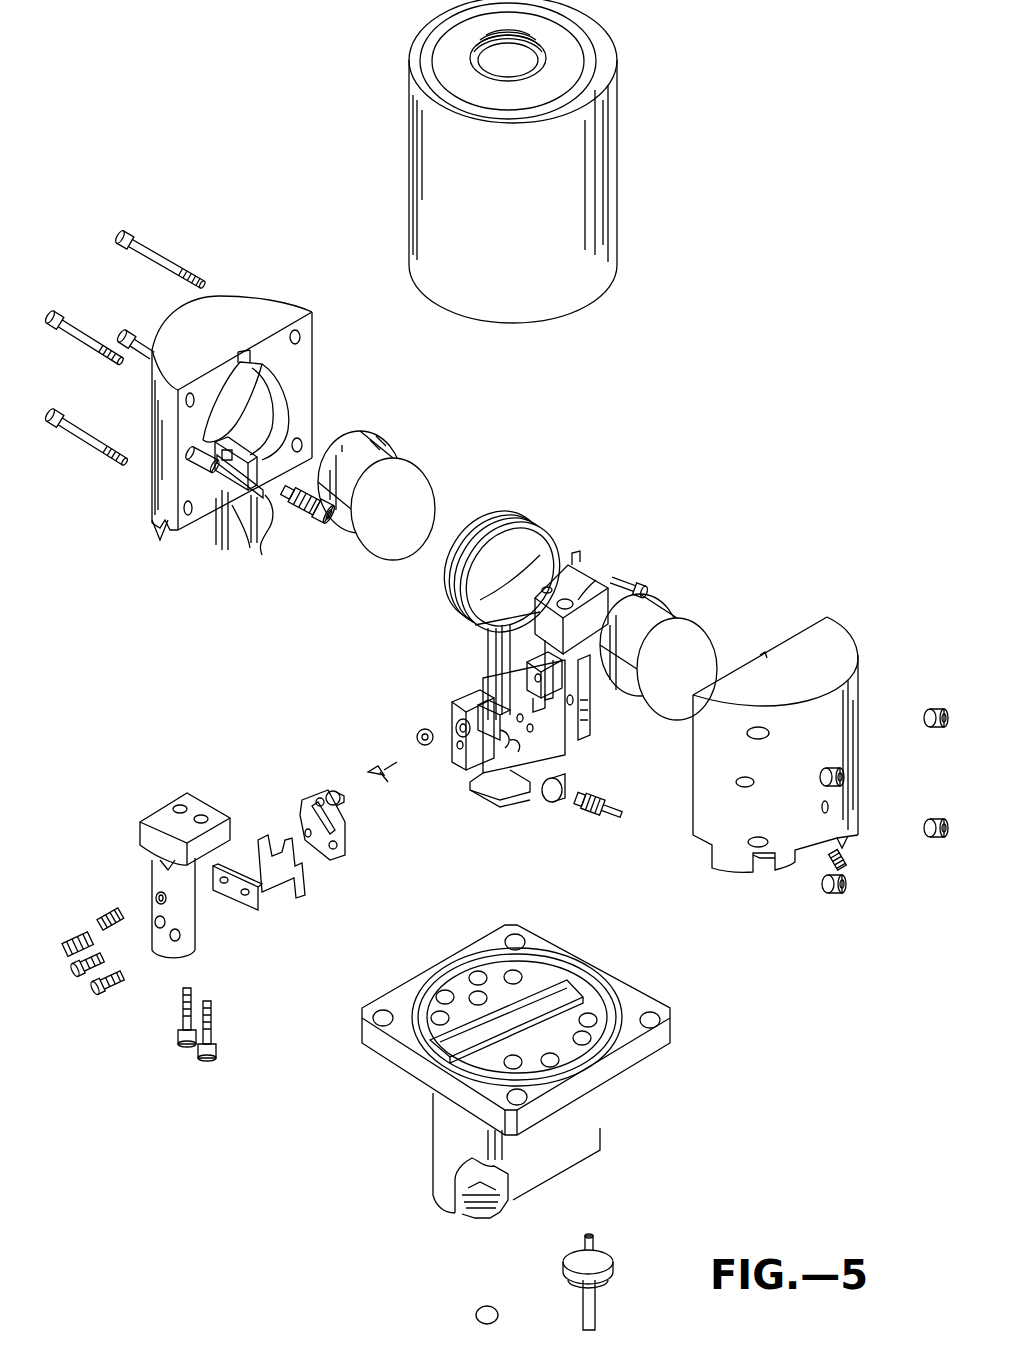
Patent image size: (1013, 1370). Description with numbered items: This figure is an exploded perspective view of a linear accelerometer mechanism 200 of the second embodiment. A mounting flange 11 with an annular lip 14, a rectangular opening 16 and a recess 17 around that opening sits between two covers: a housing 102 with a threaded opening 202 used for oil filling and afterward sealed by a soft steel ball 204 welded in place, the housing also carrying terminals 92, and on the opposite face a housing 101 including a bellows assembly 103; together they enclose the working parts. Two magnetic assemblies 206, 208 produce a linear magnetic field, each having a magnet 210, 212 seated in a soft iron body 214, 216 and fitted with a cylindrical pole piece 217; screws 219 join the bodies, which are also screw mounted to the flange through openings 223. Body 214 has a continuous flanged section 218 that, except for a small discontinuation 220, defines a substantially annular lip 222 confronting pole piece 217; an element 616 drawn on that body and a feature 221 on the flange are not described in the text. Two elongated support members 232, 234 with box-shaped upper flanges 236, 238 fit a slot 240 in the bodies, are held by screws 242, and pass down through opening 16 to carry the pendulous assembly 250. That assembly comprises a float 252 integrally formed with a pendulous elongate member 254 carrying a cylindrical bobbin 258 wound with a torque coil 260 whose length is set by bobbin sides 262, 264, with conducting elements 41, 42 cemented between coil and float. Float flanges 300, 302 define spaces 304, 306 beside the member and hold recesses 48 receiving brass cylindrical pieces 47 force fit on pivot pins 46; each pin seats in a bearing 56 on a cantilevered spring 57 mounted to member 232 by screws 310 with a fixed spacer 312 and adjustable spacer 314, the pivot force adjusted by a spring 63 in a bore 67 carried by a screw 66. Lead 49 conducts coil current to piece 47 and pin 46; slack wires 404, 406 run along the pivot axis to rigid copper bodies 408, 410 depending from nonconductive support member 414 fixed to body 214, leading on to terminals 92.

The housing 101 is at (618, 165).
The bellows assembly 103 is at (540, 50).
The linear accelerometer mechanism 200 is at (762, 366).
The magnetic assembly 208 is at (852, 582).
The screws 219 is at (178, 268).
The soft iron body 214 is at (282, 296).
The annular lip 222 is at (272, 398).
The flanged section 218 is at (288, 418).
The slot 616 is at (232, 396).
The magnet 210 is at (368, 448).
The cylindrical pole piece 217 is at (405, 466).
The discontinuation 220 is at (258, 530).
The support member 414 is at (262, 472).
The rigid body 410 is at (296, 508).
The wire 406 is at (268, 508).
The wire 404 is at (228, 545).
The rigid body 408 is at (214, 535).
The slot 240 is at (148, 542).
The magnetic assembly 206 is at (150, 566).
The pendulous assembly 250 is at (580, 520).
The side of bobbin 262 is at (506, 515).
The side of bobbin 264 is at (510, 577).
The torque coil 260 is at (500, 530).
The cylindrical bobbin 258 is at (480, 626).
The conducting element 41 is at (486, 640).
The conducting element 42 is at (500, 652).
The pendulous elongate member 254 is at (508, 662).
The flange 300 is at (482, 732).
The recess 48 is at (455, 722).
The cylindrical piece 47 is at (414, 736).
The pivot pin 46 is at (390, 782).
The electrical lead 49 is at (523, 733).
The space 304 is at (521, 742).
The float 252 is at (525, 788).
The flange 302 is at (555, 678).
The space 306 is at (545, 705).
The upper flange 238 is at (580, 585).
The elongated support member 234 is at (578, 556).
The magnet 212 is at (678, 636).
The soft iron body 216 is at (860, 640).
The elongated support member 232 is at (216, 800).
The upper flange 236 is at (158, 812).
The bore 67 is at (152, 896).
The spring 63 is at (113, 922).
The screw 66 is at (84, 942).
The screws 310 is at (85, 980).
The fixed spacer 312 is at (258, 900).
The adjustable spacer 314 is at (305, 886).
The cantilevered spring 57 is at (348, 840).
The bearing 56 is at (338, 792).
The screws 242 is at (206, 1062).
The mounting flange 11 is at (368, 1072).
The annular lip 14 is at (620, 1008).
The ring groove 221 is at (650, 1020).
The rectangular opening 16 is at (565, 995).
The recess 17 is at (465, 1044).
The openings 223 is at (590, 1042).
The housing 102 is at (440, 1130).
The threaded opening 202 is at (468, 1212).
The terminals 92 is at (568, 1265).
The soft steel ball 204 is at (478, 1315).